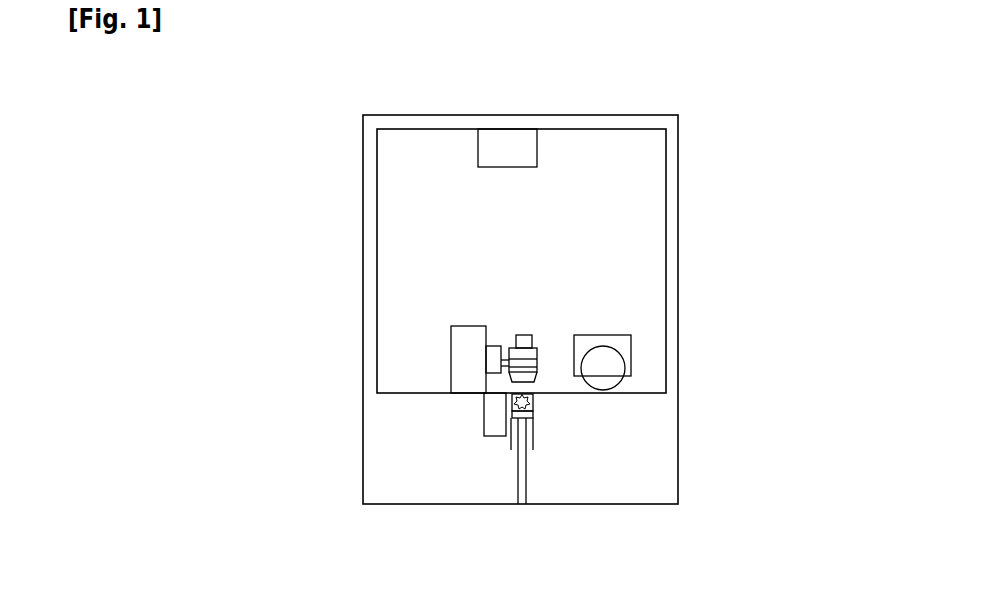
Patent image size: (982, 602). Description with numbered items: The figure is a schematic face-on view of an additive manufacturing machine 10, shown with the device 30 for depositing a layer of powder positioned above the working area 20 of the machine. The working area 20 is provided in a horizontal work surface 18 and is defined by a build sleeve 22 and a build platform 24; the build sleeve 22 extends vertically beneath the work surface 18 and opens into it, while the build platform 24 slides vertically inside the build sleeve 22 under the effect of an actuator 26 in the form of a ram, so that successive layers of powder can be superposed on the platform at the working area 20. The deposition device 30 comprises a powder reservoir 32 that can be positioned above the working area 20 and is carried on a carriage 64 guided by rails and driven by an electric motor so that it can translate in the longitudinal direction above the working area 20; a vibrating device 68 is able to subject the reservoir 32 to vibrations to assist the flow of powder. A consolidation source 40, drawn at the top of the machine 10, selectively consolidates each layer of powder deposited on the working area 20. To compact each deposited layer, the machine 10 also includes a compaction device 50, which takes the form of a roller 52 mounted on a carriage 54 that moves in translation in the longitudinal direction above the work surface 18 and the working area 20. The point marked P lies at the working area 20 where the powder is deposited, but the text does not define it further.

The additive manufacturing machine 10 is at (690, 160).
The work surface 18 is at (407, 390).
The working area 20 is at (620, 478).
The build sleeve 22 is at (533, 442).
The build platform 24 is at (534, 417).
The actuator (ram) 26 is at (525, 485).
The device for depositing a layer of powder 30 is at (504, 335).
The powder reservoir 32 is at (535, 353).
The consolidation source 40 is at (504, 148).
The compaction device 50 is at (663, 304).
The roller 52 is at (605, 358).
The carriage 54 is at (631, 355).
The carriage 64 is at (465, 385).
The vibrating device 68 is at (523, 333).
The processing point P is at (535, 400).